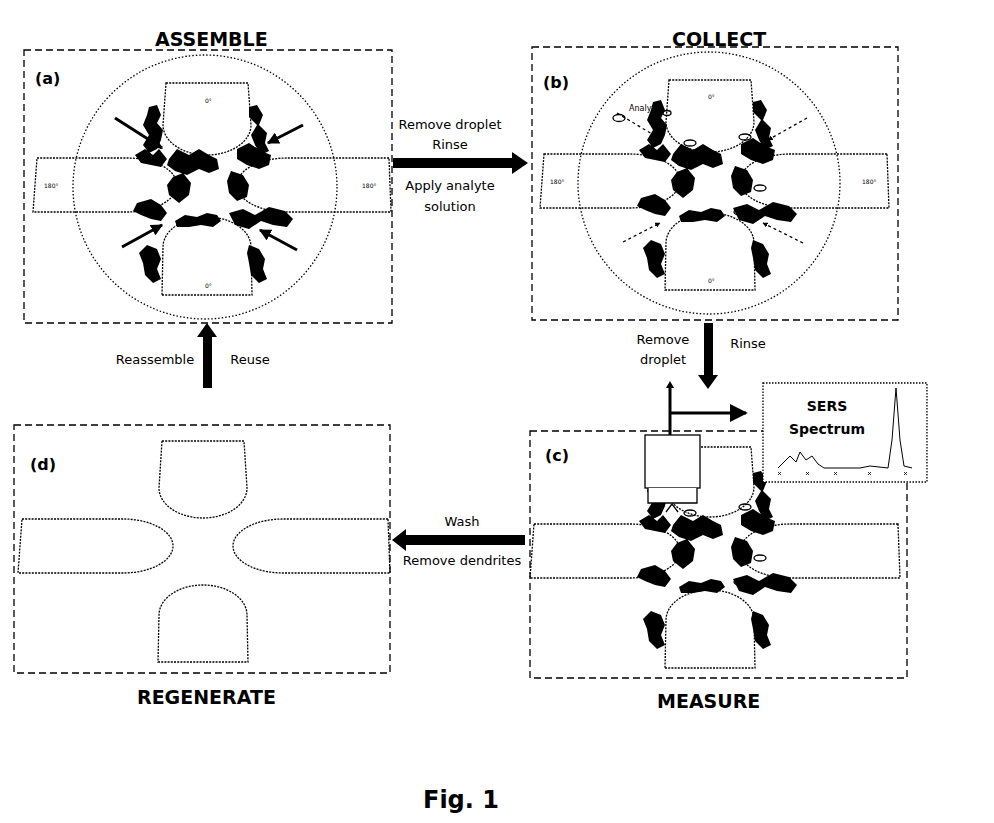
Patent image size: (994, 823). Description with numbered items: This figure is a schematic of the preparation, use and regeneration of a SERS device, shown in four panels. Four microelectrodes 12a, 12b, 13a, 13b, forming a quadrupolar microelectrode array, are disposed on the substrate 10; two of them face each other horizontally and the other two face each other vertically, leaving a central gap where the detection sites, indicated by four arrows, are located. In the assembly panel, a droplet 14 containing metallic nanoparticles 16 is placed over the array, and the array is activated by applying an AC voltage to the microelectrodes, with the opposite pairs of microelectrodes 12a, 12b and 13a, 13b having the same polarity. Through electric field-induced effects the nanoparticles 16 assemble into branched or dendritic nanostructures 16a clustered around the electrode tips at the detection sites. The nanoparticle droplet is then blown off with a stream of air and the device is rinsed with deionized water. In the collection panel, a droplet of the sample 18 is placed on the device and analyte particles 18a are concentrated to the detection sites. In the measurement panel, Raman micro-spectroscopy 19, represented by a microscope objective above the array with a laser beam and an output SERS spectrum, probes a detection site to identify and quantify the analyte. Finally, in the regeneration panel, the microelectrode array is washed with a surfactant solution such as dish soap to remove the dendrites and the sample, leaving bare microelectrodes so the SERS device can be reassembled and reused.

The substrate 10 is at (393, 277).
The microelectrode 12a is at (58, 157).
The microelectrode 12b is at (340, 160).
The microelectrode 13a is at (182, 97).
The microelectrode 13b is at (257, 282).
The droplet 14 is at (297, 93).
The metallic nanoparticles 16 is at (115, 118).
The dendritic nanostructures 16a is at (148, 212).
The droplet of the sample 18 is at (793, 83).
The analyte particles 18a is at (613, 115).
The Raman micro-spectroscopy 19 is at (645, 447).